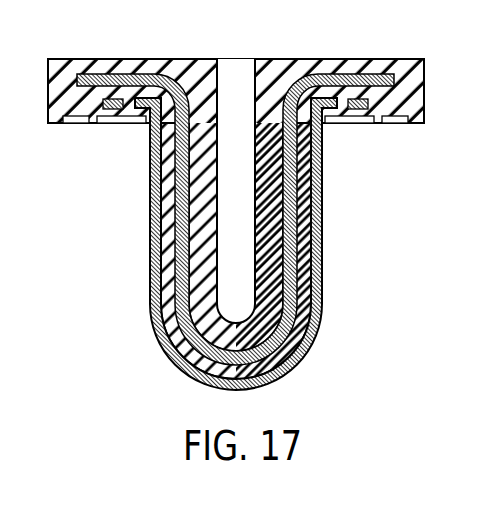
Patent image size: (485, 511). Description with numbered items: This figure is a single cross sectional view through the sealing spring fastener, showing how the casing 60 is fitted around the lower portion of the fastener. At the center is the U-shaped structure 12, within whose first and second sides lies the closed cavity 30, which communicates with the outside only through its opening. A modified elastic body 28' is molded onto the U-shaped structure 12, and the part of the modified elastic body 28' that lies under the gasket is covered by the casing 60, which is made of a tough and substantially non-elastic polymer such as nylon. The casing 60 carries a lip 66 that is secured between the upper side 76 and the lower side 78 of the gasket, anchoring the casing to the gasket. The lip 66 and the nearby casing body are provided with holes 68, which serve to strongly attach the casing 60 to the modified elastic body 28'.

The U-shaped structure 12 is at (289, 323).
The modified elastic body 28' is at (192, 237).
The closed cavity 30 is at (248, 240).
The casing 60 is at (323, 243).
The lip 66 is at (147, 74).
The holes 68 is at (134, 106).
The upper side 76 is at (350, 58).
The lower side 78 is at (347, 110).